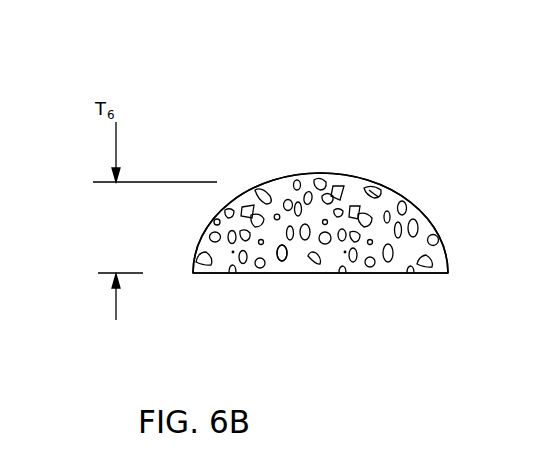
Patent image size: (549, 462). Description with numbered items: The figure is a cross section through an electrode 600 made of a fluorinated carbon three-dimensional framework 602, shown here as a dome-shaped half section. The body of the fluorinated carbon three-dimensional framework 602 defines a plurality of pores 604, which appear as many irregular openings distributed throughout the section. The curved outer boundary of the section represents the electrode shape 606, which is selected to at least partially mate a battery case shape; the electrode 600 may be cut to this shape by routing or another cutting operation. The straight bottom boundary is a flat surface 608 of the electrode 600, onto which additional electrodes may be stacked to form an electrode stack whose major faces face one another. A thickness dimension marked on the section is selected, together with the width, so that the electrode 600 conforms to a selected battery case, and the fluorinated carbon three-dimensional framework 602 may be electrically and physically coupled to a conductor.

The electrode 600 is at (138, 78).
The fluorinated carbon 3D framework 602 is at (277, 215).
The pores 604 is at (323, 198).
The electrode shape 606 is at (247, 183).
The flat surface 608 is at (410, 274).